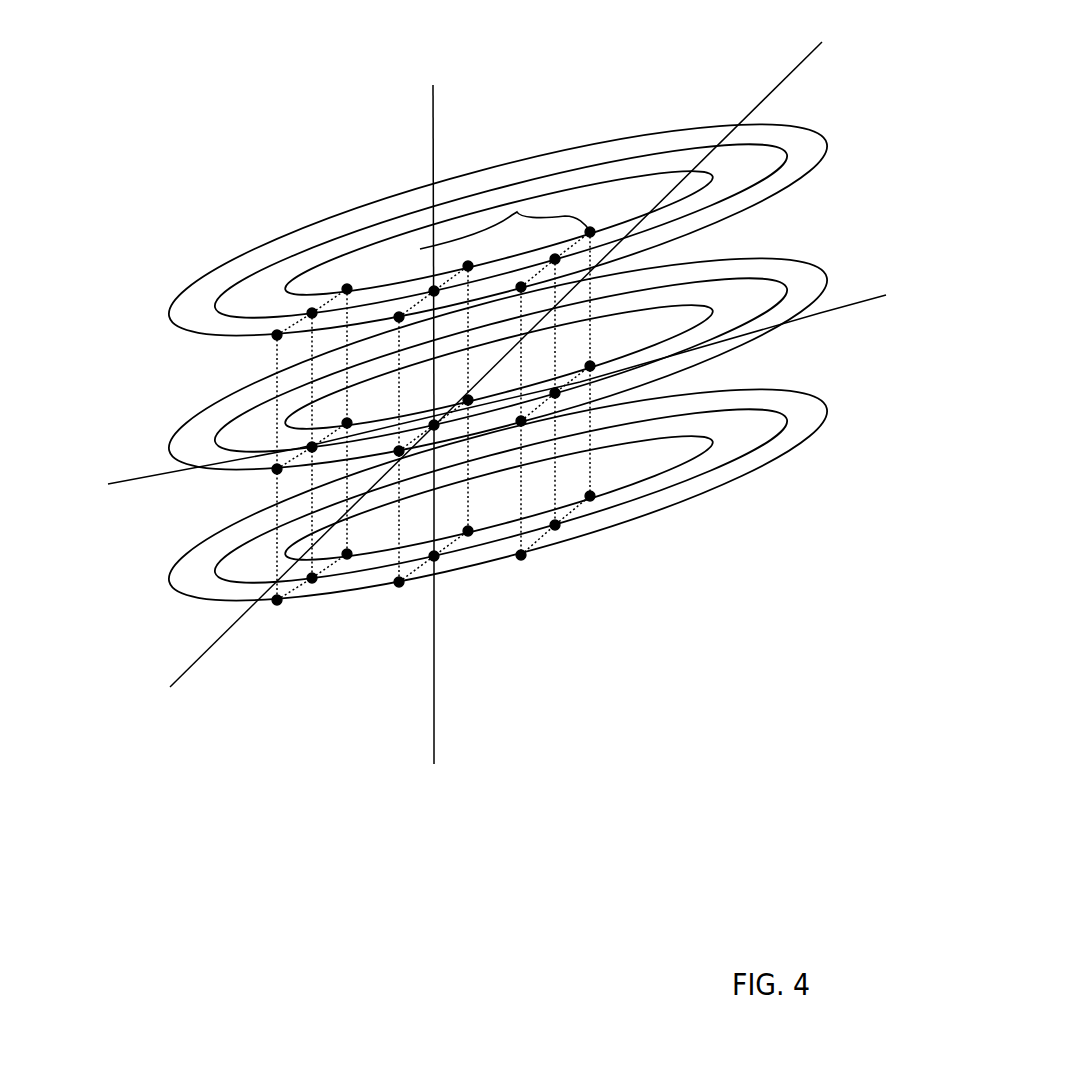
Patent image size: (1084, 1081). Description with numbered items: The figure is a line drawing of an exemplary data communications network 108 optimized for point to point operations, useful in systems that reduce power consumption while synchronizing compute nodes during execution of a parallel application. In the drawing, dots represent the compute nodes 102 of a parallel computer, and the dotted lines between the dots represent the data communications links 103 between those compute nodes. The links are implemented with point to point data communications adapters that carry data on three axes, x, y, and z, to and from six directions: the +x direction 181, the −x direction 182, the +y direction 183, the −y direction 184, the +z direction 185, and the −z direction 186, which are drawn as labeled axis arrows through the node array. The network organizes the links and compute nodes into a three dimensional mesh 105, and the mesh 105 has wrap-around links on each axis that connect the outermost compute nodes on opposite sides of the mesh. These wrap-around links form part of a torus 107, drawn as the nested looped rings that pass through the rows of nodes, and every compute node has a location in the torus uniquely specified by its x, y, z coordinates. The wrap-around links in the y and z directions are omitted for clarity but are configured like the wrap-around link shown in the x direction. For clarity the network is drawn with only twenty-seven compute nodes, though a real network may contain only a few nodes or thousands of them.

The compute nodes 102 is at (521, 555).
The data communications links 103 is at (277, 372).
The three dimensional mesh 105 is at (505, 203).
The torus 107 is at (253, 230).
The data communications network 108 is at (484, 558).
The +x direction 181 is at (910, 322).
The −x direction 182 is at (88, 527).
The +y direction 183 is at (878, 55).
The −y direction 184 is at (153, 748).
The +z direction 185 is at (450, 56).
The −z direction 186 is at (453, 844).